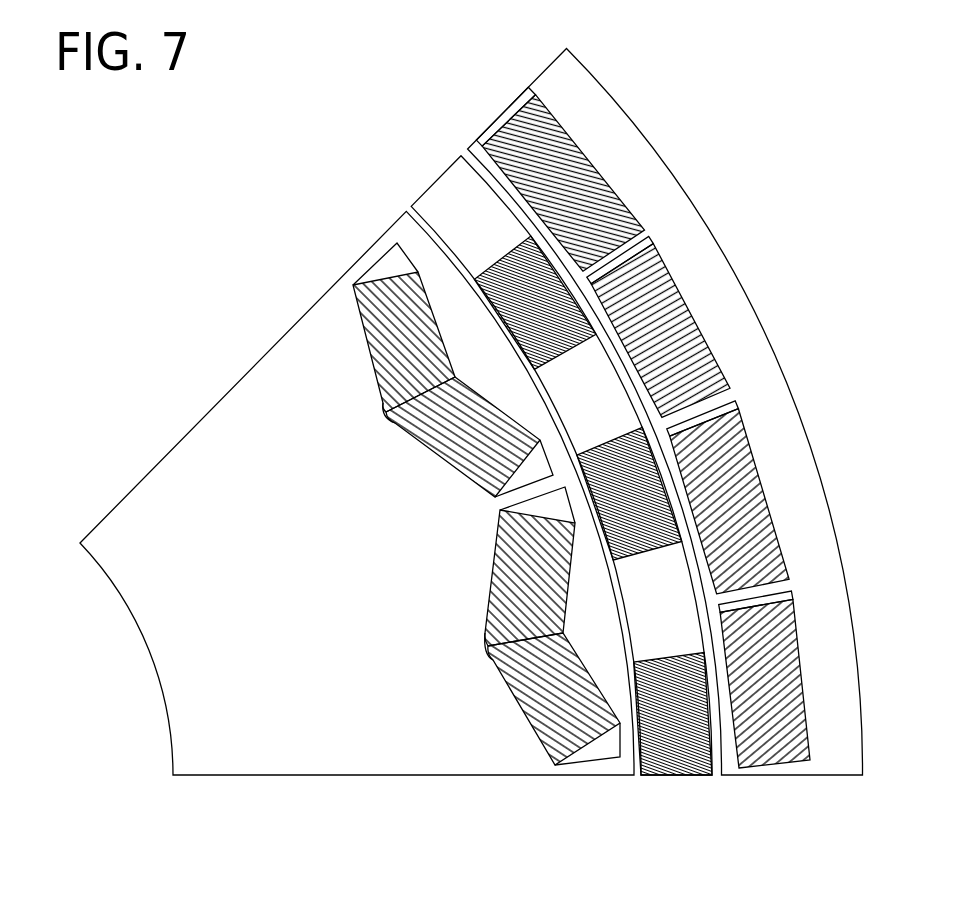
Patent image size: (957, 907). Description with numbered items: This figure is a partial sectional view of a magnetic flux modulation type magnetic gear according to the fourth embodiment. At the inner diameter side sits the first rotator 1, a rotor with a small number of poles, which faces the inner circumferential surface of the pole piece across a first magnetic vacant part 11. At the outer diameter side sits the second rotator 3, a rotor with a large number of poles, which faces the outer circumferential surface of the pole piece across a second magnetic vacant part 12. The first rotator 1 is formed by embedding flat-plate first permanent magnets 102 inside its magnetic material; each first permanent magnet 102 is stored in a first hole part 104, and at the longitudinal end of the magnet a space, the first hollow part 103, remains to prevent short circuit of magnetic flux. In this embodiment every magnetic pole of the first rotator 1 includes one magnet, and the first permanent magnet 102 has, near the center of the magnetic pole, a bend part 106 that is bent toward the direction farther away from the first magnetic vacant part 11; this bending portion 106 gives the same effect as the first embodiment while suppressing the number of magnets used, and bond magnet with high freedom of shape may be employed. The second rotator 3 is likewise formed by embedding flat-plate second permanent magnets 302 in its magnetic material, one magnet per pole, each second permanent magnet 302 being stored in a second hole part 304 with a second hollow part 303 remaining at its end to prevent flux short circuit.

The first rotator 1 is at (357, 488).
The second rotator 3 is at (623, 397).
The first magnetic vacant part 11 is at (640, 777).
The second magnetic vacant part 12 is at (717, 777).
The first permanent magnet 102 is at (404, 505).
The first hollow part 103 is at (398, 243).
The first hole part 104 is at (404, 483).
The bend part 106 is at (393, 422).
The second permanent magnet 302 is at (567, 137).
The second hollow part 303 is at (503, 127).
The second hole part 304 is at (490, 143).